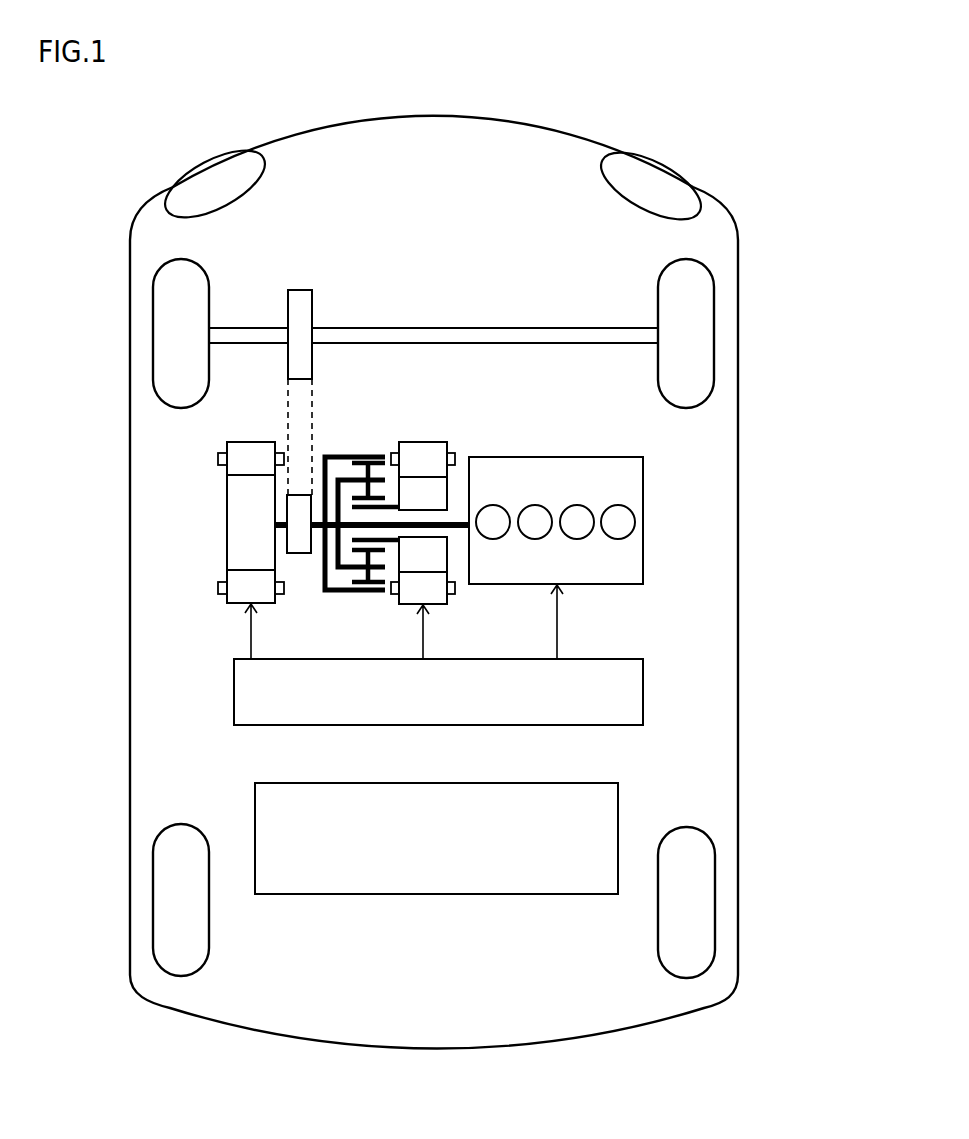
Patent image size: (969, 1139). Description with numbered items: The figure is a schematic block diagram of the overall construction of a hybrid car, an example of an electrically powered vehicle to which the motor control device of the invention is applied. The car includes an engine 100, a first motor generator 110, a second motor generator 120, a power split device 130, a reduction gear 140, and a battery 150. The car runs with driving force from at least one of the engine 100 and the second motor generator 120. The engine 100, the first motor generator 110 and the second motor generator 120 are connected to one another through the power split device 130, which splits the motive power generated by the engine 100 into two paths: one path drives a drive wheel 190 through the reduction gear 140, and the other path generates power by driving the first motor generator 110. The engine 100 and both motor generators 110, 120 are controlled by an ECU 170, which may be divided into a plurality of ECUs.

The engine 100 is at (557, 457).
The first motor generator 110 is at (433, 442).
The second motor generator 120 is at (227, 525).
The power split device 130 is at (357, 455).
The reduction gear 140 is at (303, 275).
The battery 150 is at (437, 894).
The ECU 170 is at (234, 692).
The drive wheel 190 is at (153, 335).